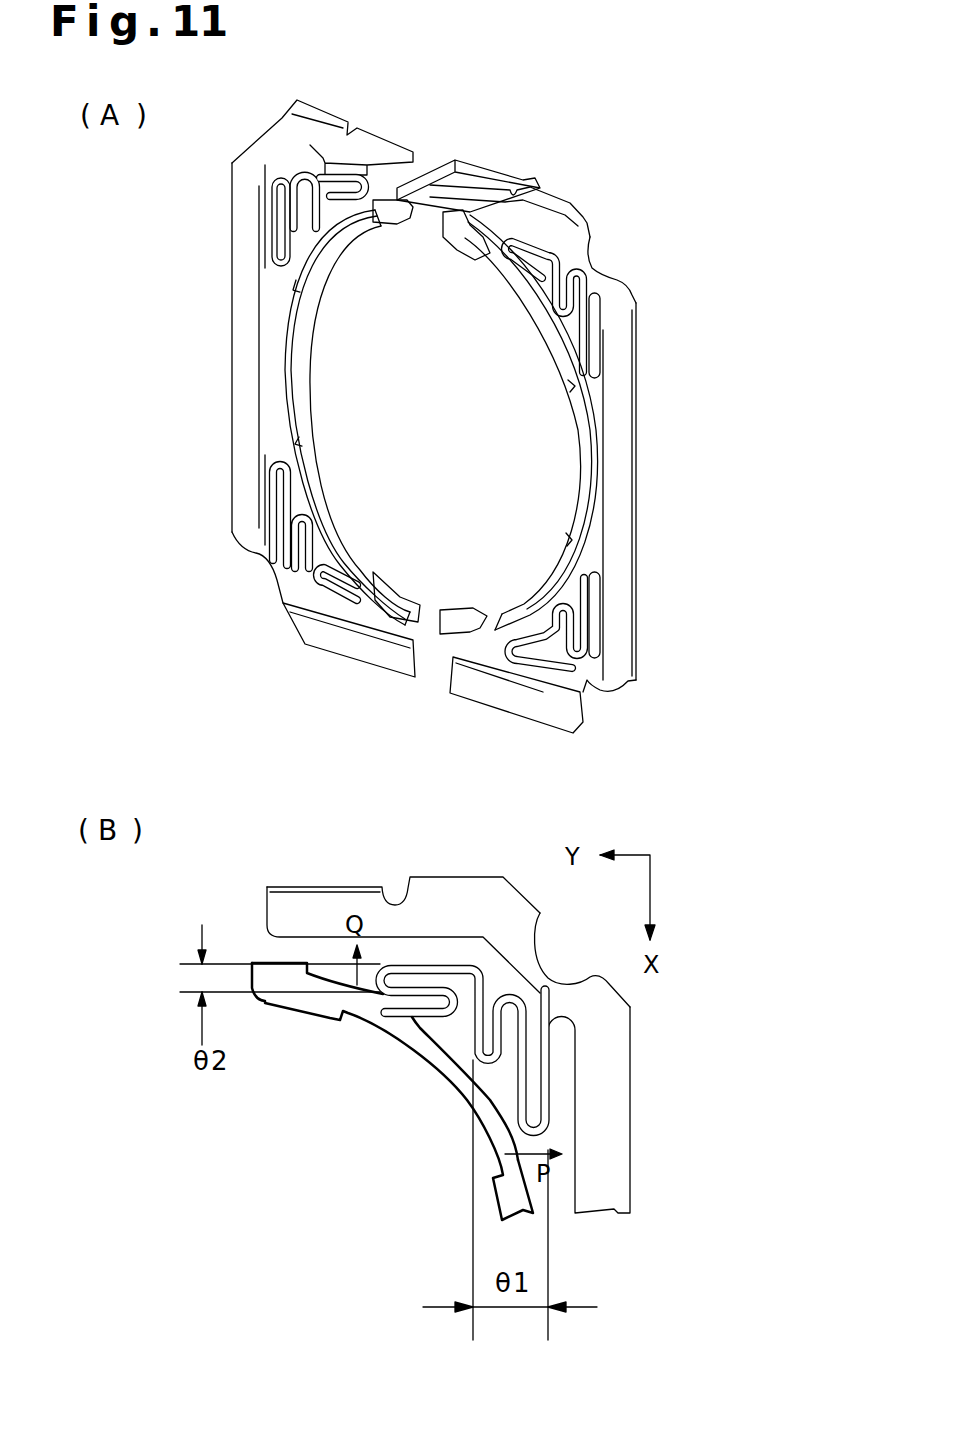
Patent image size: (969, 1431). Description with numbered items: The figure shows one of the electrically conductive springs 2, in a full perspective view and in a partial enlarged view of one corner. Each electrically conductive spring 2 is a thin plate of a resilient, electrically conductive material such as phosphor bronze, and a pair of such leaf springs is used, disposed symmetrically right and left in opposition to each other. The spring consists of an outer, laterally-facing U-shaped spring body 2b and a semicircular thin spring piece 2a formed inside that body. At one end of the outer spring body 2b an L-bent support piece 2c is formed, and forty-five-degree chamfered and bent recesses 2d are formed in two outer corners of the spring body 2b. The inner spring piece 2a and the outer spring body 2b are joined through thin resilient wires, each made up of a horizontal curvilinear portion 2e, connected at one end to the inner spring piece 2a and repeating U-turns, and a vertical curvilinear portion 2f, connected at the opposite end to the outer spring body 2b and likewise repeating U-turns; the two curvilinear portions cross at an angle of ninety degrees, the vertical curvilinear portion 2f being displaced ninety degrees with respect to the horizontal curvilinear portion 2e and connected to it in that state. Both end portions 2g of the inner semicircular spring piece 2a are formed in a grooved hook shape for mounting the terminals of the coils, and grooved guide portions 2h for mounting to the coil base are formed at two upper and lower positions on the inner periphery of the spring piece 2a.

The electrically conductive spring 2 is at (373, 670).
The inner spring piece 2a is at (300, 396).
The outer spring body 2b is at (243, 383).
The support piece 2c is at (368, 145).
The bent recess 2d is at (270, 147).
The horizontal curvilinear portion 2e is at (530, 240).
The vertical curvilinear portion 2f is at (270, 243).
The end portion 2g is at (403, 223).
The guide portion 2h is at (330, 272).